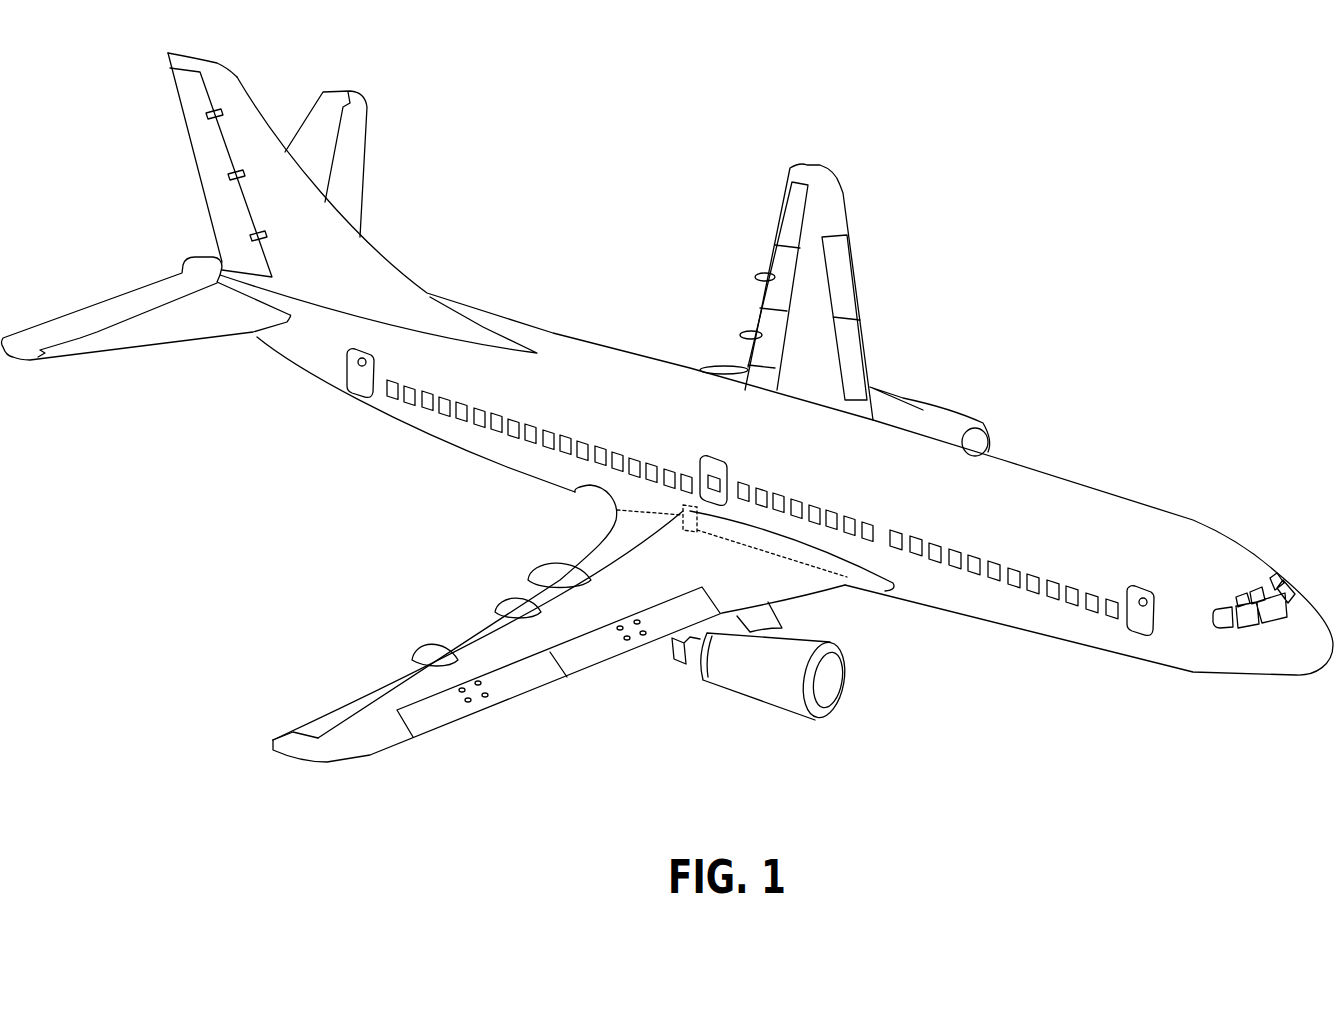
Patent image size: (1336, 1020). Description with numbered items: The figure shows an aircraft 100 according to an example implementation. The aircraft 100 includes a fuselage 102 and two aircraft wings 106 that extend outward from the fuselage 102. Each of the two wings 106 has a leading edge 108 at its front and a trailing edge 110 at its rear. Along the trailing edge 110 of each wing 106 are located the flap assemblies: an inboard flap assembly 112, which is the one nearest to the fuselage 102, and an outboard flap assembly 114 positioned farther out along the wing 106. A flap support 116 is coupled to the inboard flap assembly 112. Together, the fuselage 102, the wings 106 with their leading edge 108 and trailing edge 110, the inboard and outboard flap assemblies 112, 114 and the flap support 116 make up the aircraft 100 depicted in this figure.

The aircraft 100 is at (1073, 170).
The fuselage 102 is at (1108, 508).
The aircraft wing 106 is at (815, 353).
The leading edge 108 is at (865, 352).
The trailing edge 110 is at (760, 186).
The inboard flap assembly 112 is at (758, 380).
The outboard flap assembly 114 is at (775, 275).
The flap support 116 is at (683, 511).